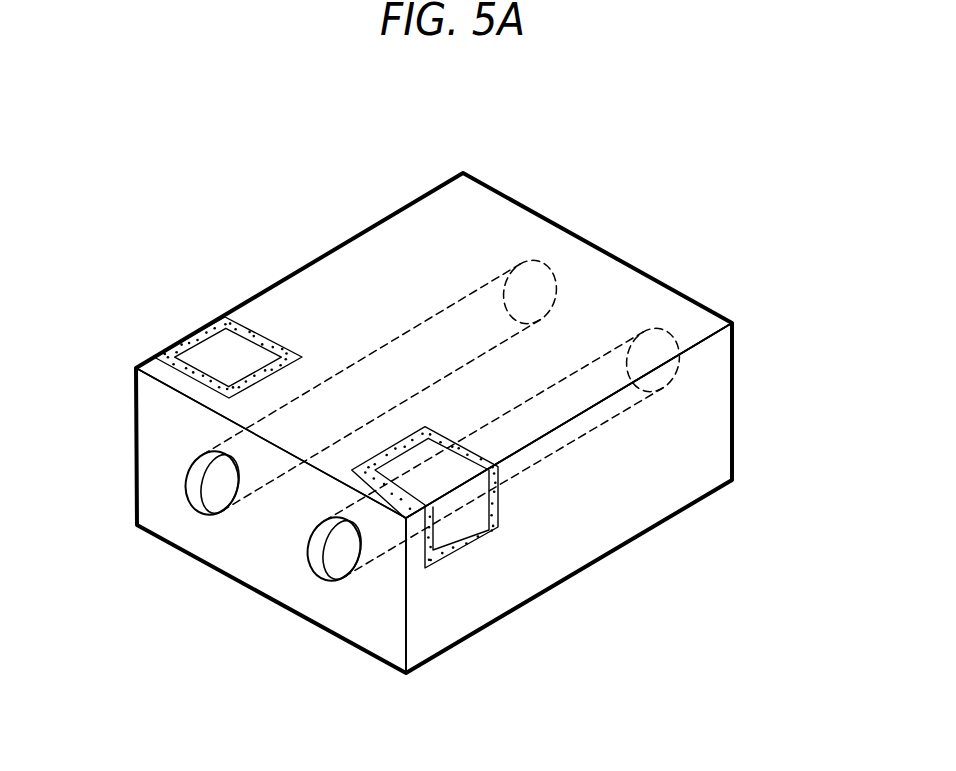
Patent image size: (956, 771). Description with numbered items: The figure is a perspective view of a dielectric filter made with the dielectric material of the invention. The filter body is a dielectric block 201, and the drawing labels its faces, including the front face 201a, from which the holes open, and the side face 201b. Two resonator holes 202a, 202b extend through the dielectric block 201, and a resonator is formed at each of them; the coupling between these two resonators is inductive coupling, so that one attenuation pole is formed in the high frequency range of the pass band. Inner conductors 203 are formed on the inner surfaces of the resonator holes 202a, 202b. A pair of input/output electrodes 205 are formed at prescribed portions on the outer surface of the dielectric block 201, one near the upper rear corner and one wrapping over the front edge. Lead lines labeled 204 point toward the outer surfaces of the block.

The dielectric block 201 is at (511, 188).
The front face of block 201a is at (380, 645).
The side face of block 201b is at (750, 432).
The resonator hole 202a is at (172, 476).
The resonator hole 202b is at (305, 569).
The inner conductor 203 is at (220, 482).
The outer surfaces of block 204 is at (660, 322).
The input/output electrode 205 is at (217, 353).